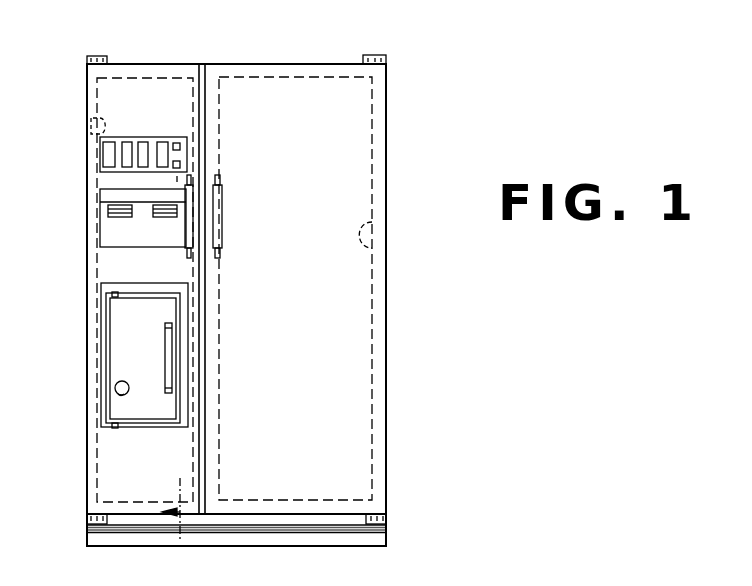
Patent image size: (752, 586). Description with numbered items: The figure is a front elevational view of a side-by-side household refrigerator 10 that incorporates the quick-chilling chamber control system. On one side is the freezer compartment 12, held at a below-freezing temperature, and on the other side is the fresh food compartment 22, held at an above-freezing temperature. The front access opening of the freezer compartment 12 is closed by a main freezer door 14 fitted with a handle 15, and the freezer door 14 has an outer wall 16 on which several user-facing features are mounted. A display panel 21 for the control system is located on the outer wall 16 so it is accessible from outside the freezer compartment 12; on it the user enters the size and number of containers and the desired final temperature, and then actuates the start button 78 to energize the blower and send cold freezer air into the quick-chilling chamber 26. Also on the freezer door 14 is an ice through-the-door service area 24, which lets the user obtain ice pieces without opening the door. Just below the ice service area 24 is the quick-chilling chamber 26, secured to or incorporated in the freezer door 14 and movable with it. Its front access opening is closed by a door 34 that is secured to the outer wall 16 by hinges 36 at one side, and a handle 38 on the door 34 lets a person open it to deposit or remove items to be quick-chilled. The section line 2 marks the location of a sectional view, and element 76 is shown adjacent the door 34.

The household refrigerator 10 is at (387, 165).
The main freezer door 14 is at (165, 63).
The outer wall 16 is at (100, 103).
The freezer compartment 12 is at (90, 136).
The display panel 21 is at (142, 137).
The section line 2 is at (176, 153).
The ice through-the-door service area 24 is at (113, 230).
The handle 15 is at (189, 240).
The fresh food compartment 22 is at (360, 222).
The door 34 is at (113, 325).
The hinges 36 is at (114, 294).
The quick-chilling chamber 26 is at (148, 352).
The handle 38 is at (168, 353).
The knob 76 is at (113, 388).
The start button 78 is at (118, 394).